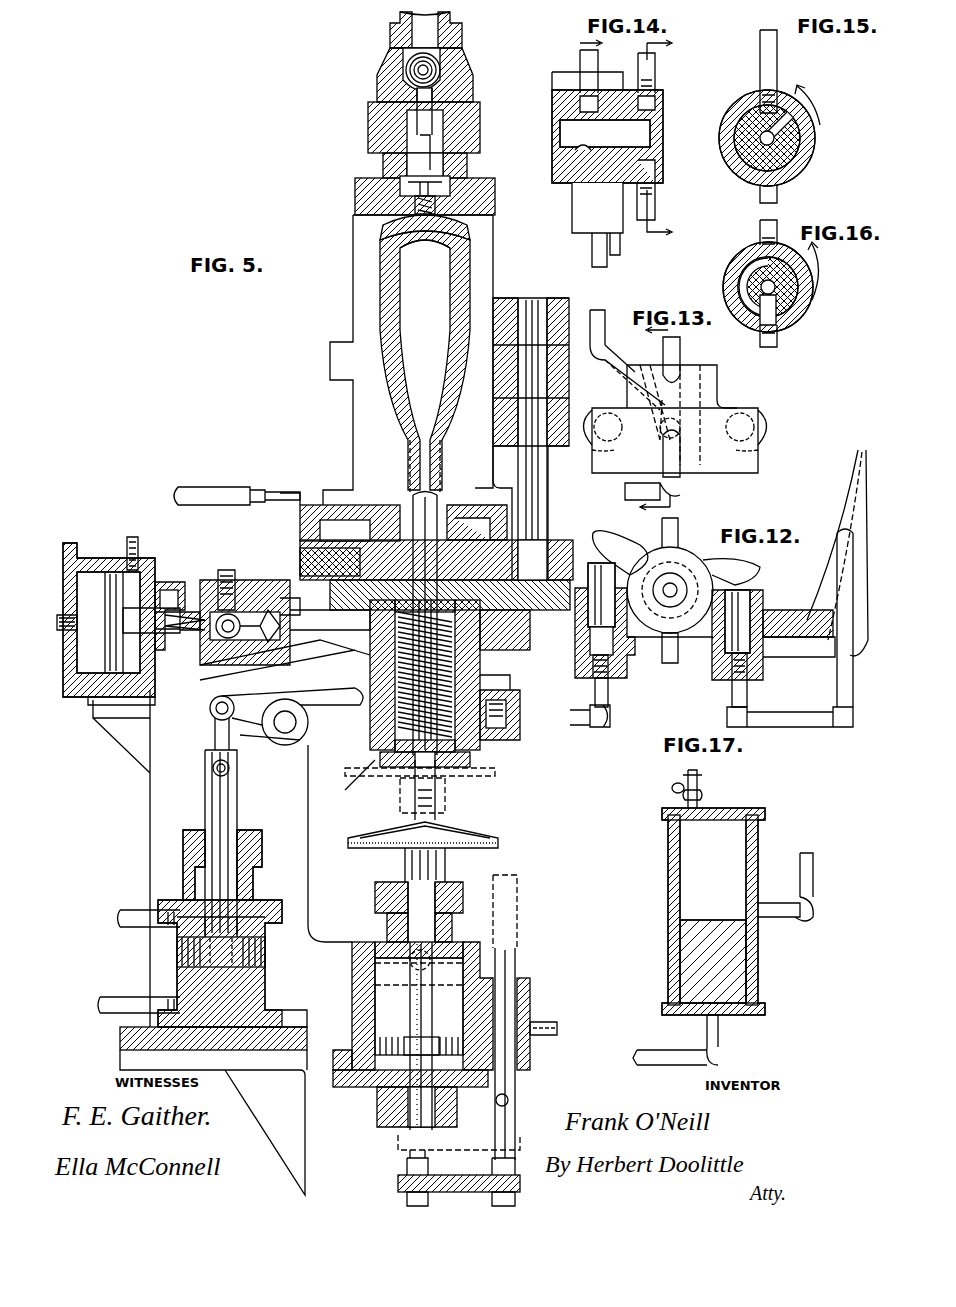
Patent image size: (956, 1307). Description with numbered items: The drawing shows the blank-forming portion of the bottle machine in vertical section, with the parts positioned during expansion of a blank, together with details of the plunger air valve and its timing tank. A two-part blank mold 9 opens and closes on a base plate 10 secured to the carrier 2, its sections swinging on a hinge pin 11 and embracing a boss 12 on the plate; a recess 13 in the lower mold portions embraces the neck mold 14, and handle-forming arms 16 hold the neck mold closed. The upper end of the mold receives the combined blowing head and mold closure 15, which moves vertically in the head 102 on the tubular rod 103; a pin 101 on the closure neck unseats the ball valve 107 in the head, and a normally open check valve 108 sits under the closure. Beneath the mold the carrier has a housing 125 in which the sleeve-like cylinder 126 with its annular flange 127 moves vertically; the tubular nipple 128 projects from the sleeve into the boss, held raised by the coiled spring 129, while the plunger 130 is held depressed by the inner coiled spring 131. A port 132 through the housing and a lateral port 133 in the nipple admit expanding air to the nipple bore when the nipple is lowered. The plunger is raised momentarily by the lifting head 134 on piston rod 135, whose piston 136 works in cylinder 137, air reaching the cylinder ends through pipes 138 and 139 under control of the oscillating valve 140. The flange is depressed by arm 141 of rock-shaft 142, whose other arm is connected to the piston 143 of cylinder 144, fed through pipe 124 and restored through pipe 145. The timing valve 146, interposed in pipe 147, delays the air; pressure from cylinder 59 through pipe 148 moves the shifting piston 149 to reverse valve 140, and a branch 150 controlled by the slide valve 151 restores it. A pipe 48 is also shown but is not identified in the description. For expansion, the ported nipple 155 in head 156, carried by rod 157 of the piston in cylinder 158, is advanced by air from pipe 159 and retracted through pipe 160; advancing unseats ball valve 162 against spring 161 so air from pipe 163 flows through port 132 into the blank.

In FIG. 5, the carrier 2 is at (546, 632).
In FIG. 5, the blank mold 9 is at (353, 314).
In FIG. 5, the base plate 10 is at (547, 542).
In FIG. 5, the hinge pin 11 is at (540, 491).
In FIG. 5, the boss 12 is at (496, 507).
In FIG. 5, the recess 13 is at (386, 456).
In FIG. 5, the neck mold 14 is at (380, 476).
In FIG. 13, the neck mold 14 is at (667, 421).
In FIG. 5, the combined blowing head and mold closure 15 is at (372, 204).
In FIG. 14, the combined blowing head and mold closure 15 is at (599, 133).
In FIG. 5, the handle-forming arms 16 is at (288, 490).
In FIG. 14, the handle-forming arms 16 is at (674, 138).
In FIG. 14, the pipe 48 is at (621, 250).
In FIG. 15, the pipe 48 is at (777, 195).
In FIG. 13, the pipe 48 is at (615, 365).
In FIG. 12, the cylinder 59 is at (850, 470).
In FIG. 5, the pin 101 is at (412, 100).
In FIG. 5, the head 102 is at (460, 84).
In FIG. 5, the tubular rod 103 is at (415, 30).
In FIG. 5, the ball valve 107 is at (436, 60).
In FIG. 5, the check valve 108 is at (440, 204).
In FIG. 5, the pipe 124 is at (102, 1001).
In FIG. 5, the housing 125 is at (470, 651).
In FIG. 5, the sleeve-like cylinder 126 is at (462, 673).
In FIG. 5, the annular flange 127 is at (375, 742).
In FIG. 5, the tubular nipple 128 is at (300, 522).
In FIG. 5, the coiled spring 129 is at (348, 769).
In FIG. 5, the plunger 130 is at (408, 504).
In FIG. 5, the coiled spring 131 is at (410, 778).
In FIG. 5, the port 132 is at (348, 648).
In FIG. 5, the lateral port 133 is at (300, 556).
In FIG. 5, the lifting head 134 is at (452, 840).
In FIG. 5, the piston rod 135 is at (400, 926).
In FIG. 5, the piston 136 is at (400, 1040).
In FIG. 5, the cylinder 137 is at (352, 994).
In FIG. 5, the pipe 138 is at (428, 953).
In FIG. 14, the pipe 138 is at (580, 60).
In FIG. 15, the pipe 138 is at (777, 55).
In FIG. 13, the pipe 138 is at (681, 489).
In FIG. 12, the pipe 138 is at (679, 535).
In FIG. 5, the pipe 139 is at (432, 1040).
In FIG. 14, the pipe 139 is at (656, 195).
In FIG. 16, the pipe 139 is at (777, 337).
In FIG. 13, the pipe 139 is at (668, 383).
In FIG. 14, the oscillating valve 140 is at (655, 120).
In FIG. 15, the oscillating valve 140 is at (813, 132).
In FIG. 16, the oscillating valve 140 is at (812, 290).
In FIG. 12, the oscillating valve 140 is at (660, 620).
In FIG. 5, the arm 141 is at (340, 708).
In FIG. 5, the rock-shaft 142 is at (285, 728).
In FIG. 5, the piston 143 is at (213, 962).
In FIG. 5, the cylinder 144 is at (275, 965).
In FIG. 5, the pipe 145 is at (120, 913).
In FIG. 17, the timing valve 146 is at (680, 893).
In FIG. 14, the pipe 147 is at (656, 78).
In FIG. 16, the pipe 147 is at (760, 231).
In FIG. 13, the pipe 147 is at (682, 358).
In FIG. 17, the pipe 147 is at (813, 878).
In FIG. 14, the pipe 148 is at (592, 258).
In FIG. 12, the pipe 148 is at (837, 689).
In FIG. 13, the shifting piston 149 is at (762, 427).
In FIG. 12, the shifting piston 149 is at (745, 620).
In FIG. 5, the branch 150 is at (548, 1024).
In FIG. 12, the branch 150 is at (607, 718).
In FIG. 5, the slide valve 151 is at (516, 964).
In FIG. 5, the ported nipple 155 is at (290, 598).
In FIG. 5, the head 156 is at (262, 590).
In FIG. 5, the rod 157 is at (161, 620).
In FIG. 5, the cylinder 158 is at (95, 560).
In FIG. 5, the pipe 159 is at (100, 616).
In FIG. 5, the pipe 160 is at (138, 545).
In FIG. 5, the spring 161 is at (195, 635).
In FIG. 5, the ball valve 162 is at (230, 640).
In FIG. 5, the pipe 163 is at (224, 572).